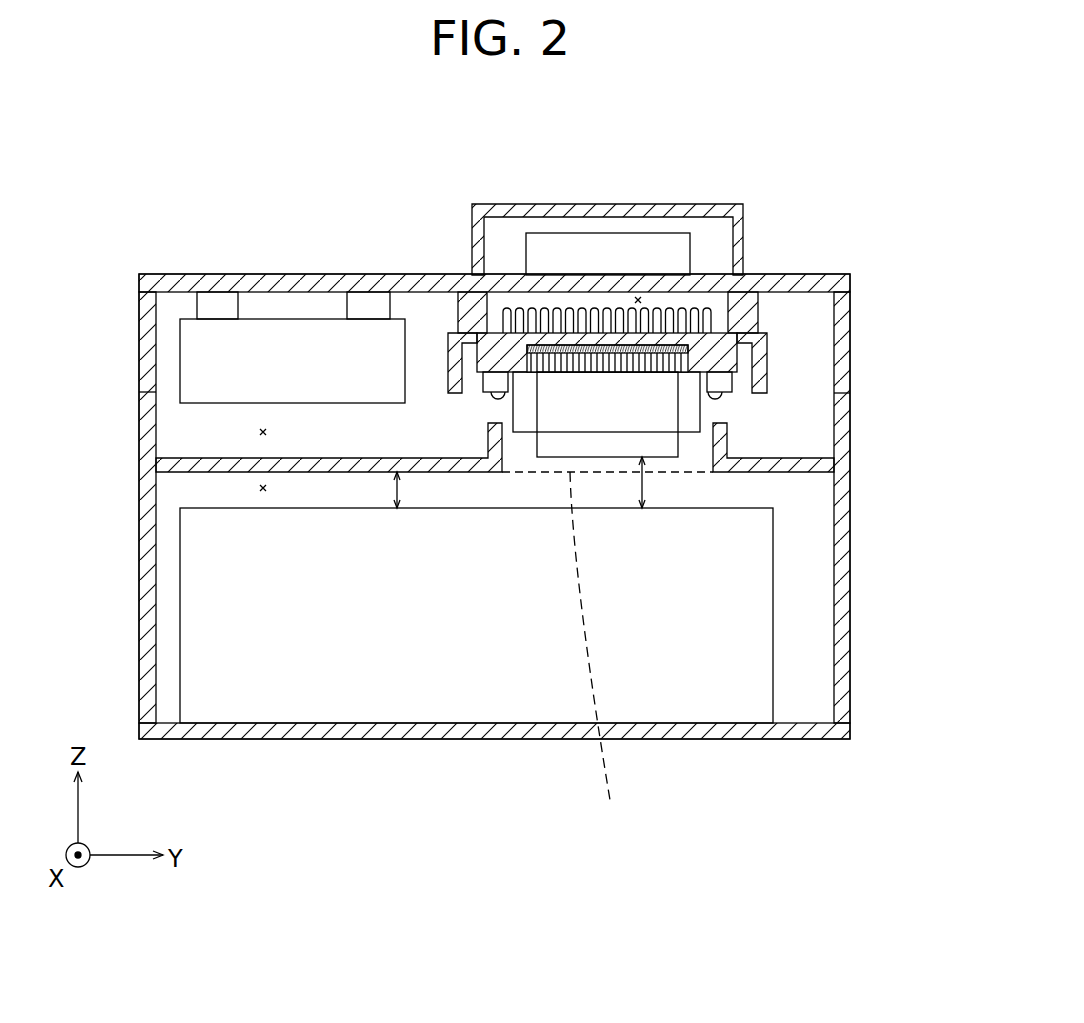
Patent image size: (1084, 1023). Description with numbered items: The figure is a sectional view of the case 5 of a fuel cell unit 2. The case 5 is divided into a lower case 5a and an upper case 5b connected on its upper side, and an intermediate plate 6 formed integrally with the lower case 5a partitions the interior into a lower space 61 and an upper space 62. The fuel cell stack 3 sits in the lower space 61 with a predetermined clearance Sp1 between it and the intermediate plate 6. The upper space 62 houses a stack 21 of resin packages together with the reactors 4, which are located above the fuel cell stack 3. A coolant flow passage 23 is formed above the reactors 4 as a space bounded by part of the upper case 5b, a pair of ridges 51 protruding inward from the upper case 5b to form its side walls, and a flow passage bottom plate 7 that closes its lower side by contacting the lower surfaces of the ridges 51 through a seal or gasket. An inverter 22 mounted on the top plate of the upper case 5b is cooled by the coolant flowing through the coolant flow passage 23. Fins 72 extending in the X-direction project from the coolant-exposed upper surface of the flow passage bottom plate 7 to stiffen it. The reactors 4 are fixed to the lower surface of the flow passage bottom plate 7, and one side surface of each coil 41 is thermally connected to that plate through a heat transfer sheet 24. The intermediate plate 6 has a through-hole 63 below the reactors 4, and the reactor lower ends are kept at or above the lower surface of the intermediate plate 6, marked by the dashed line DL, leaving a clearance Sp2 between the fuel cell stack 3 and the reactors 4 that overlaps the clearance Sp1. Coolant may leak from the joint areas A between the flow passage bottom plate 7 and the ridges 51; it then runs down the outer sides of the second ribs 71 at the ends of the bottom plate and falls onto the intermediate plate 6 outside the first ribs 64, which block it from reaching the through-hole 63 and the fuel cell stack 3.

The fuel cell unit 2 is at (140, 213).
The fuel cell stack 3 is at (202, 625).
The reactor 4 is at (606, 445).
The case 5 is at (494, 520).
The lower case 5a is at (243, 740).
The upper case 5b is at (223, 285).
The intermediate plate 6 is at (193, 457).
The flow passage bottom plate 7 is at (777, 412).
The stack of packages 21 is at (268, 330).
The inverter 22 is at (660, 243).
The coolant flow passage 23 is at (638, 298).
The heat transfer sheet 24 is at (715, 362).
The coil 41 is at (737, 373).
The ridge 51 is at (462, 303).
The lower space 61 is at (317, 507).
The upper space 62 is at (263, 432).
The through-hole 63 is at (507, 478).
The first rib 64 is at (263, 488).
The second rib 71 is at (450, 357).
The fin 72 is at (590, 307).
The clearance Sp1 is at (397, 490).
The clearance Sp2 is at (643, 483).
The dashed line DL is at (597, 652).
The joint area A is at (440, 332).